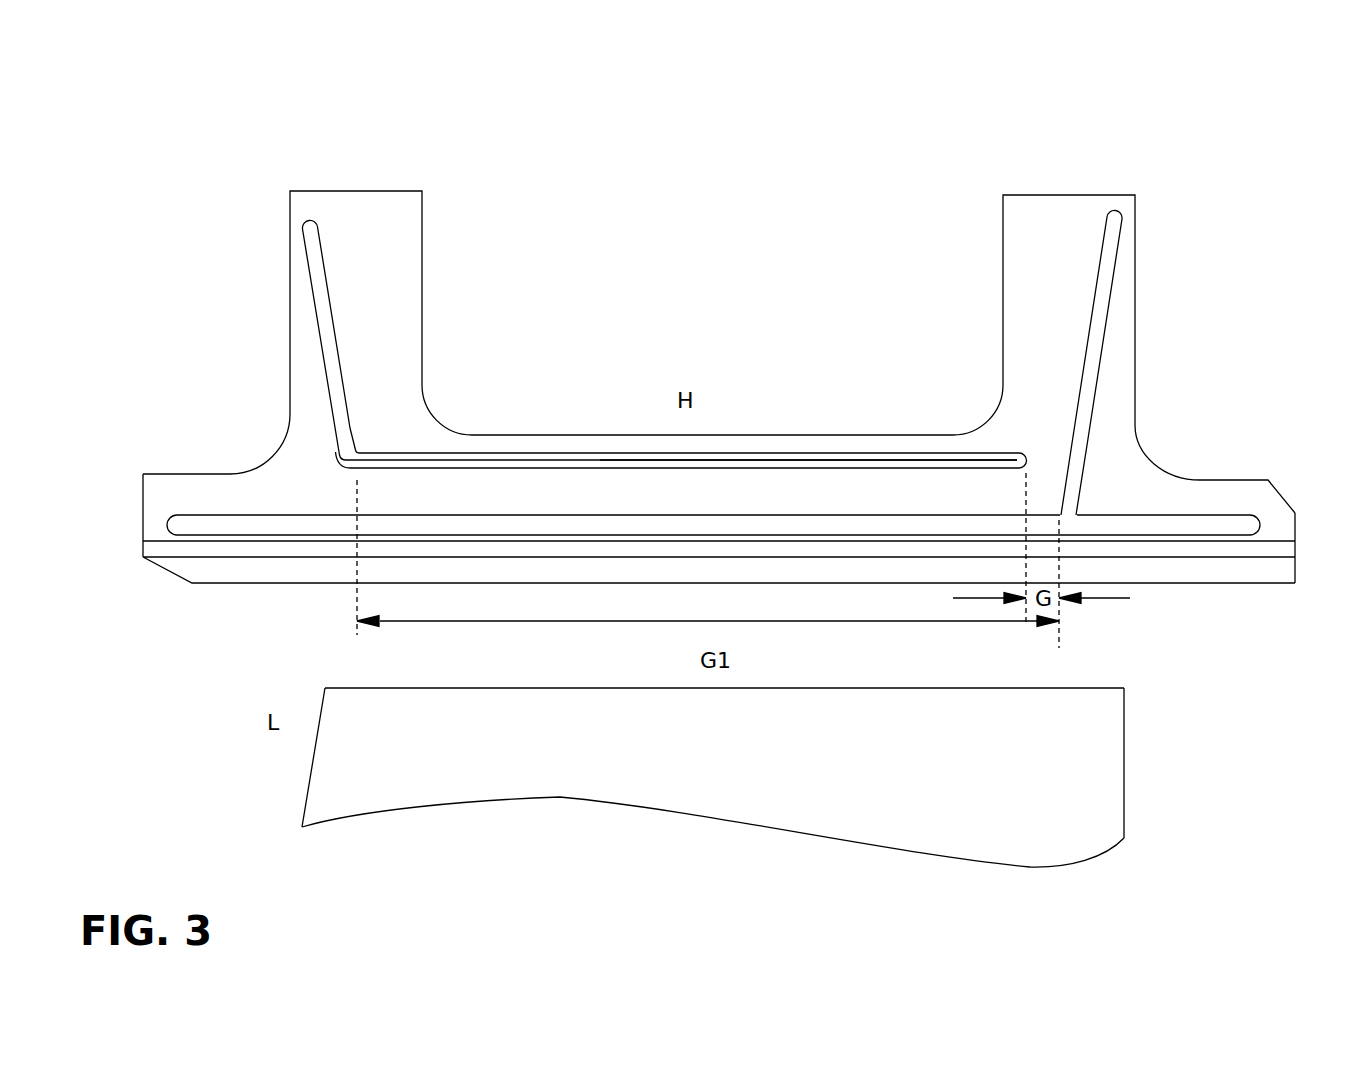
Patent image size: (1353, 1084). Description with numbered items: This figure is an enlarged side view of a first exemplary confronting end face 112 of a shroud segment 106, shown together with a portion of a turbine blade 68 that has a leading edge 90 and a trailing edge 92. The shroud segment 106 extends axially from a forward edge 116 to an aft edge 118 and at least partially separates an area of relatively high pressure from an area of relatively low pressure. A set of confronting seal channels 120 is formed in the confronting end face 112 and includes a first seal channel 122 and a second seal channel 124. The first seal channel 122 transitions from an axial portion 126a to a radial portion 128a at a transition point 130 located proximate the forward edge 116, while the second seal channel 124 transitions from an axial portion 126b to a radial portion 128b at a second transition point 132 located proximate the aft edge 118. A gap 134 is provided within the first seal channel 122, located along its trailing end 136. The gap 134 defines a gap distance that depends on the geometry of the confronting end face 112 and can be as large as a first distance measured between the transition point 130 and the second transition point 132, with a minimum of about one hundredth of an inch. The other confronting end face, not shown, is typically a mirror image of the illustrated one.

The turbine blade 68 is at (1080, 815).
The leading edge 90 is at (312, 759).
The trailing edge 92 is at (1124, 720).
The shroud segment 106 is at (365, 168).
The confronting end face 112 is at (1052, 225).
The forward edge 116 is at (142, 513).
The aft edge 118 is at (1297, 537).
The set of confronting seal channels 120 is at (297, 483).
The first seal channel 122 is at (497, 462).
The second seal channel 124 is at (803, 530).
The axial portion 126a is at (833, 458).
The axial portion 126b is at (622, 527).
The radial portion 128a is at (322, 282).
The radial portion 128b is at (1107, 283).
The transition point 130 is at (368, 445).
The second transition point 132 is at (1087, 503).
The gap 134 is at (1053, 455).
The trailing end 136 is at (1030, 460).